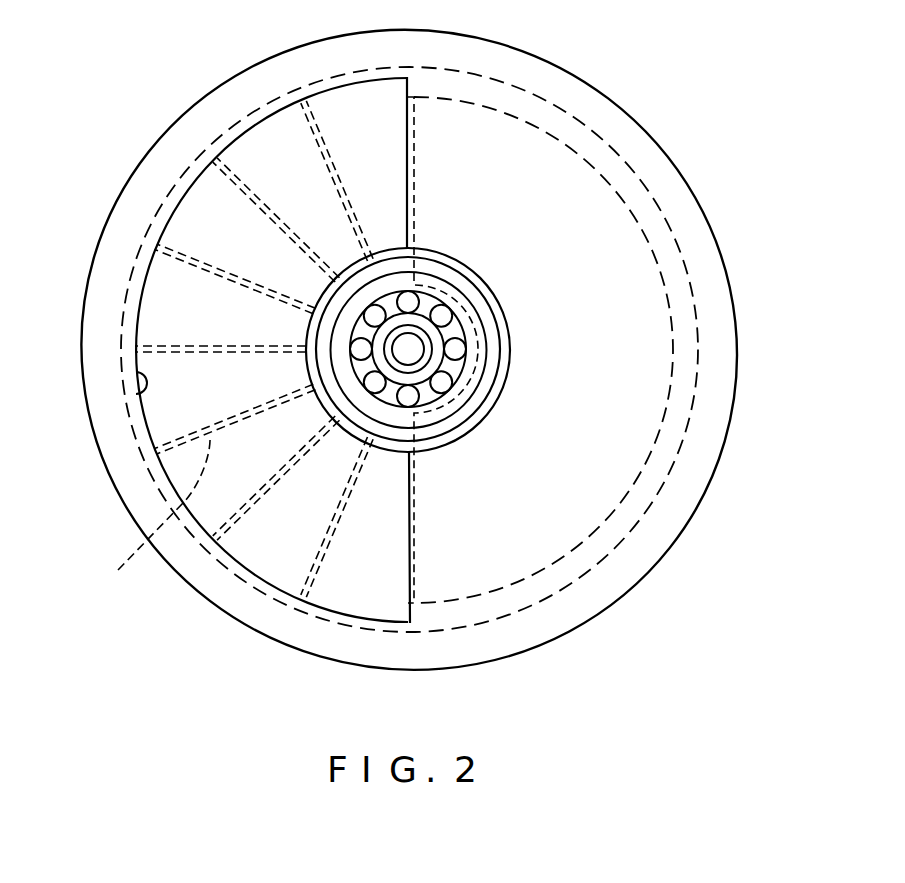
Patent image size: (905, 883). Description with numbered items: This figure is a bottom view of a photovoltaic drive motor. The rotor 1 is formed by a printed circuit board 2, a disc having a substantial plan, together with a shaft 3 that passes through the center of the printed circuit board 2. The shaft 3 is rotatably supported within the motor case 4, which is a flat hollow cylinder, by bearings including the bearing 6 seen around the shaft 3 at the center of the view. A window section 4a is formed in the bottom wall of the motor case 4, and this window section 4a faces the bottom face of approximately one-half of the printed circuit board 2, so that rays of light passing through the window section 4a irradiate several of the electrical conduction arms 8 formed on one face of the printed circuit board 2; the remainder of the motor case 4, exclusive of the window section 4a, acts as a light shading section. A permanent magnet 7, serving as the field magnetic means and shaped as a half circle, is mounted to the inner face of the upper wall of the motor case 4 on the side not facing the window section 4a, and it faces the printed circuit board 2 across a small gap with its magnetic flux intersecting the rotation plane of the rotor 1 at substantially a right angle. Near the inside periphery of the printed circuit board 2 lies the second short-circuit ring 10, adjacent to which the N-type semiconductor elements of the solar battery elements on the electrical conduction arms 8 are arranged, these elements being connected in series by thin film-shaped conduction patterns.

The rotor 1 is at (532, 92).
The printed circuit board 2 is at (164, 303).
The shaft 3 is at (418, 355).
The motor case 4 is at (605, 92).
The window section 4a is at (137, 393).
The bearing 6 is at (440, 405).
The permanent magnet 7 is at (603, 183).
The electrical conduction arms 8 is at (161, 520).
The second short-circuit ring 10 is at (386, 452).